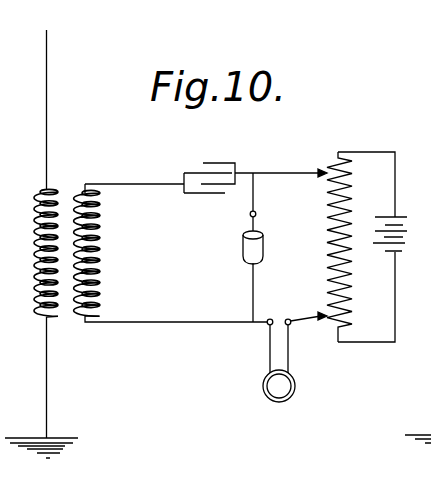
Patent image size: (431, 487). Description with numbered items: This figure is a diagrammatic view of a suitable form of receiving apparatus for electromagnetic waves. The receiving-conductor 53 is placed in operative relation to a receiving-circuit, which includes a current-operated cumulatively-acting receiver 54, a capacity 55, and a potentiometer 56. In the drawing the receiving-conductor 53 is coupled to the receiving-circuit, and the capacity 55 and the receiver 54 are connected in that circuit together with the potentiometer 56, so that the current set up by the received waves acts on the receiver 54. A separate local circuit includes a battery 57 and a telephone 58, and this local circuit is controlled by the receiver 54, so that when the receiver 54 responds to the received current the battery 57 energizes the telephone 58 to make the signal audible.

The receiving-conductor 53 is at (46, 100).
The current-operated cumulatively-acting receiver 54 is at (243, 248).
The capacity 55 is at (209, 161).
The potentiometer 56 is at (328, 250).
The battery 57 is at (405, 239).
The telephone 58 is at (290, 387).